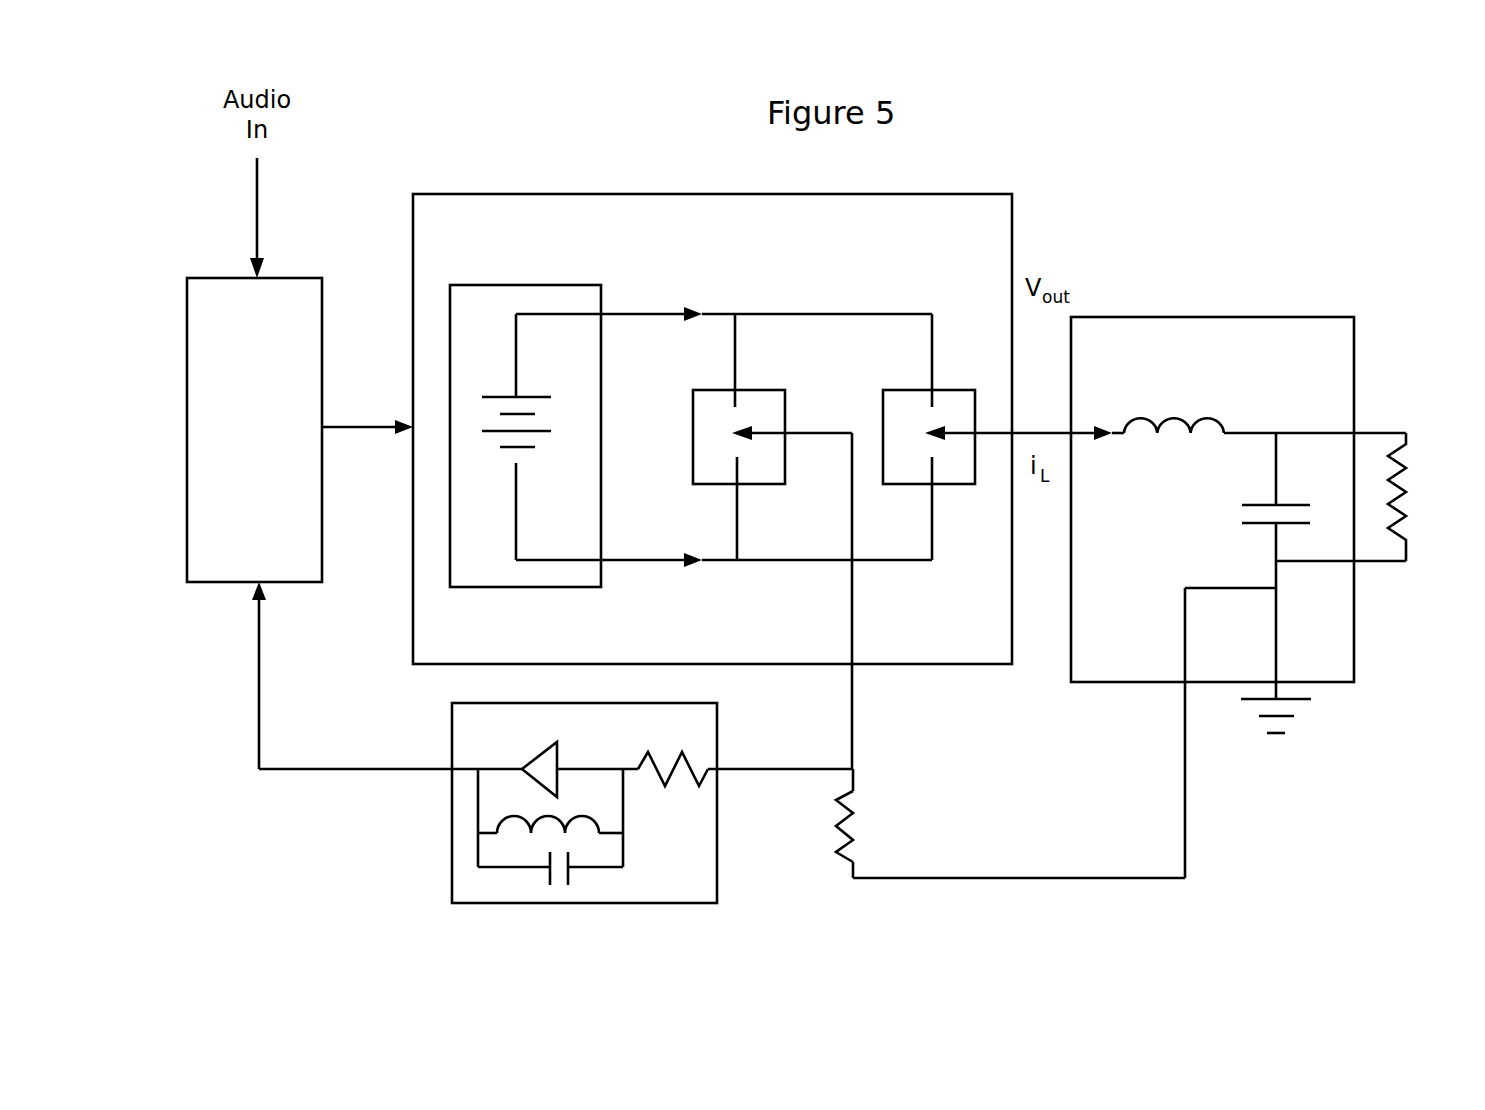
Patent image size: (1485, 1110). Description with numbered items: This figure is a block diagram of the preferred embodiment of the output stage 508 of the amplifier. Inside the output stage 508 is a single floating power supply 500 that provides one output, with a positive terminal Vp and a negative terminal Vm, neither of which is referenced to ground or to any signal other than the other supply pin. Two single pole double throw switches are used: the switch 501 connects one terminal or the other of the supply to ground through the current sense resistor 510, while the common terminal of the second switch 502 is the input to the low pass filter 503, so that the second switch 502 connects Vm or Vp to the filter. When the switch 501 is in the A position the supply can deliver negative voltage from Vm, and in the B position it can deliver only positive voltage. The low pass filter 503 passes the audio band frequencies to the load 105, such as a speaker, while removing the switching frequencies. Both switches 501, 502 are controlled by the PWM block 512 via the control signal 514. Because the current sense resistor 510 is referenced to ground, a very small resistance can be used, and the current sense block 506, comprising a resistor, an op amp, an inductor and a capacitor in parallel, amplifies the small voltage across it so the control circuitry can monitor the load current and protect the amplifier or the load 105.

The load 105 is at (1423, 467).
The floating power supply 500 is at (525, 420).
The switch 501 is at (747, 437).
The second switch 502 is at (939, 437).
The low pass filter 503 is at (1238, 597).
The current sense block 506 is at (652, 803).
The output stage 508 is at (712, 481).
The current sense resistor 510 is at (1010, 823).
The PWM block 512 is at (254, 430).
The control signal 514 is at (367, 409).